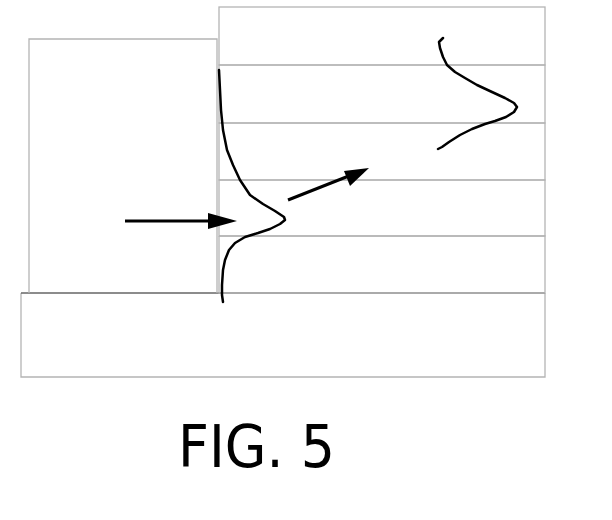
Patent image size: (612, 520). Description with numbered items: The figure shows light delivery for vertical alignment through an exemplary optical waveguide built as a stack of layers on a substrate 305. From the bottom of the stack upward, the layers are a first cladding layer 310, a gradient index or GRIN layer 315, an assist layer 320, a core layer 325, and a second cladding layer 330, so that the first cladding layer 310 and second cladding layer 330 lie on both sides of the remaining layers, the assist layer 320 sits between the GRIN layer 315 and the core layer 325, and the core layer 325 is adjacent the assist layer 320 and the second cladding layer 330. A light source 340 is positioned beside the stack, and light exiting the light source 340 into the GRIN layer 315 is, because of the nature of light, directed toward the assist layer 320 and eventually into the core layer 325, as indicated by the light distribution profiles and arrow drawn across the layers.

The substrate 305 is at (318, 354).
The first cladding layer 310 is at (418, 283).
The gradient index (GRIN) layer 315 is at (418, 225).
The assist layer 320 is at (418, 169).
The core layer 325 is at (418, 111).
The second cladding layer 330 is at (418, 55).
The light source 340 is at (159, 184).